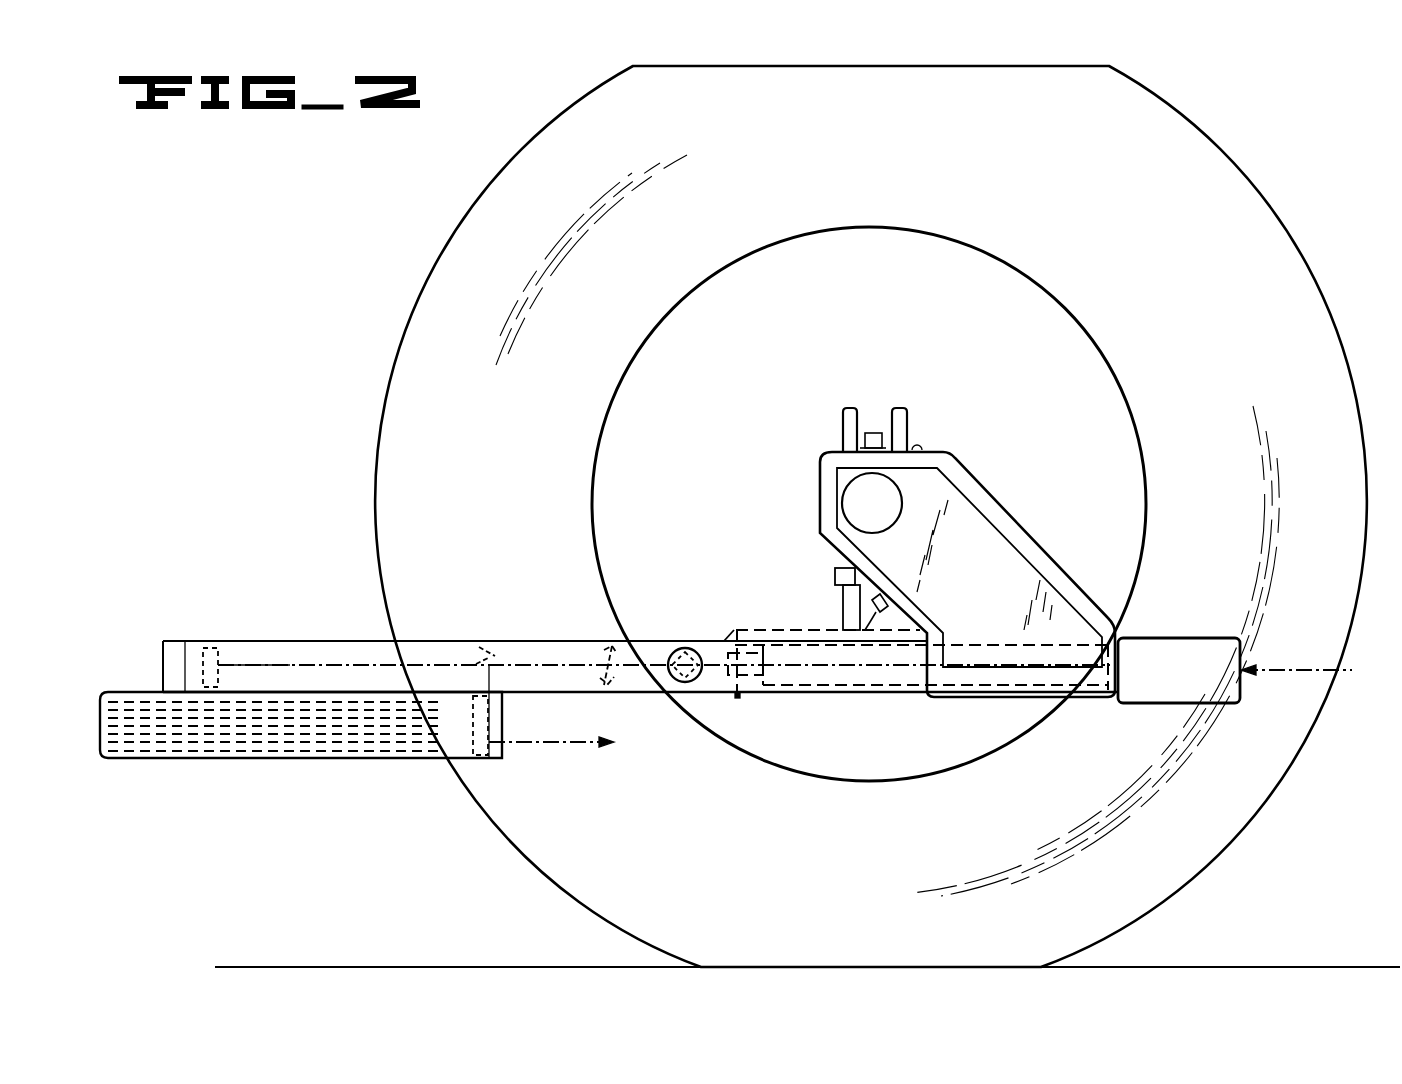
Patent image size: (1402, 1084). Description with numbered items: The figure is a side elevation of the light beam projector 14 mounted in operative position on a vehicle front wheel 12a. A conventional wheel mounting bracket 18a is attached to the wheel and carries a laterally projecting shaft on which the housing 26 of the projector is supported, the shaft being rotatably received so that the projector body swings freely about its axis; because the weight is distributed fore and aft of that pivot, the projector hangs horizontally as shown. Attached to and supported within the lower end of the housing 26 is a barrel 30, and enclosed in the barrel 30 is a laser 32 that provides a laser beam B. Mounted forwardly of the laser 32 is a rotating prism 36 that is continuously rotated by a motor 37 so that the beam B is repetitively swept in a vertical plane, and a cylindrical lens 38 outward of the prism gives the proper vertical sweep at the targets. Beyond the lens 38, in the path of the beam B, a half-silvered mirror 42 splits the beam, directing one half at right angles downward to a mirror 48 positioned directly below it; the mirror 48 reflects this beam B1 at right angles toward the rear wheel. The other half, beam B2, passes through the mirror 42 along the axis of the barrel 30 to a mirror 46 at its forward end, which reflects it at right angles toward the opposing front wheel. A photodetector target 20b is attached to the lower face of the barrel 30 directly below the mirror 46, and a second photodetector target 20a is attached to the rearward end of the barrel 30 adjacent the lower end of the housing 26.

The vehicle front wheel 12a is at (880, 150).
The light beam projector 14 is at (640, 616).
The wheel mounting bracket 18a is at (838, 561).
The photodetector target 20a is at (1145, 678).
The photodetector target 20b is at (276, 752).
The housing 26 is at (992, 532).
The barrel 30 is at (535, 640).
The laser 32 is at (790, 687).
The rotating prism 36 is at (699, 662).
The motor 37 is at (696, 681).
The cylindrical lens 38 is at (606, 686).
The half-silvered mirror 42 is at (486, 648).
The mirror 46 is at (213, 648).
The mirror 48 is at (485, 746).
The laser beam B is at (636, 661).
The split laser beam B1 is at (1309, 669).
The split laser beam B2 is at (272, 665).